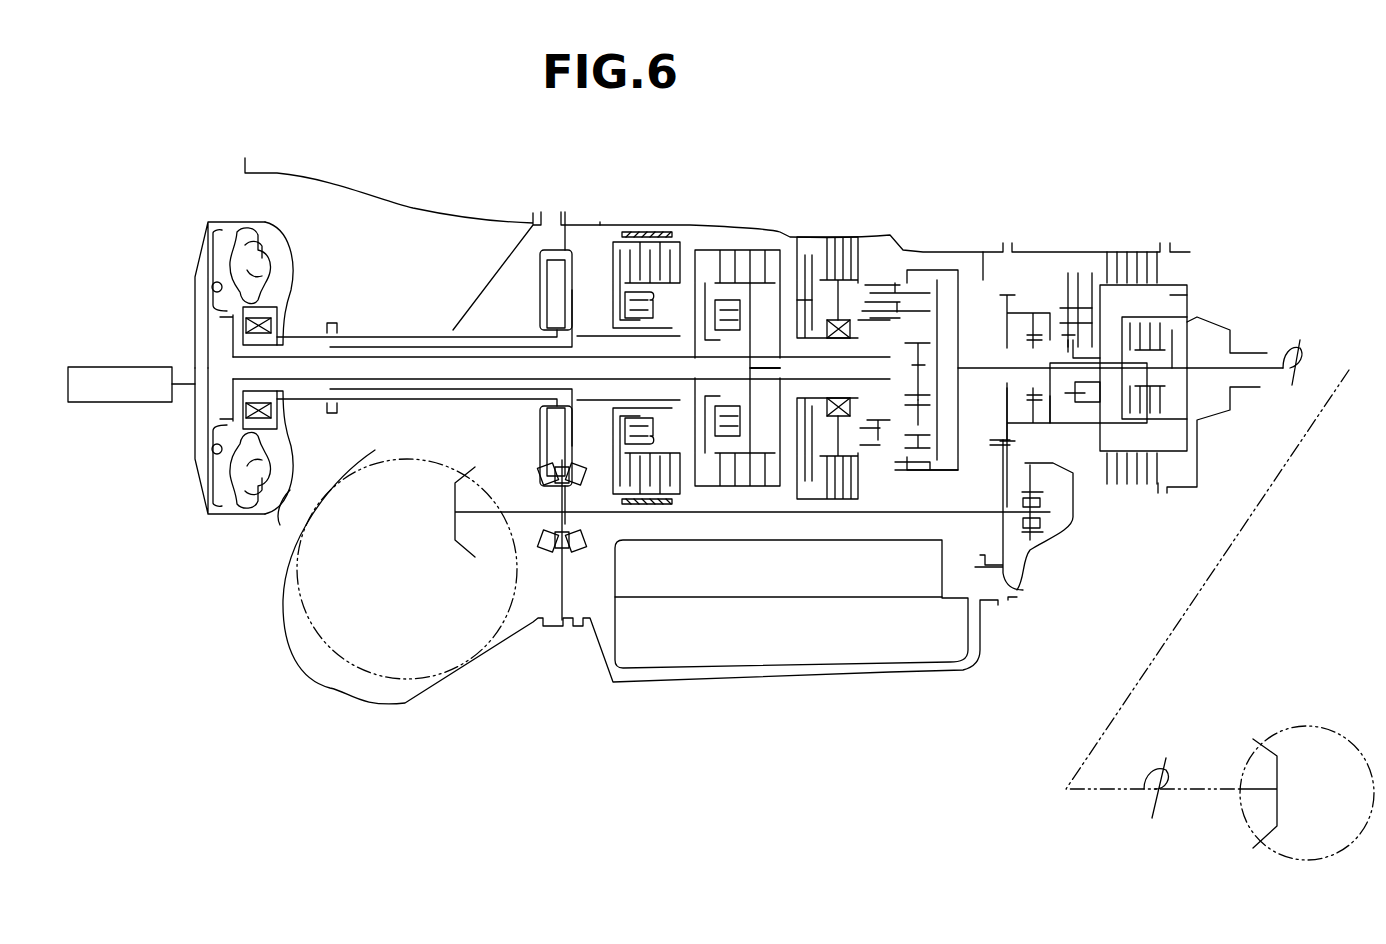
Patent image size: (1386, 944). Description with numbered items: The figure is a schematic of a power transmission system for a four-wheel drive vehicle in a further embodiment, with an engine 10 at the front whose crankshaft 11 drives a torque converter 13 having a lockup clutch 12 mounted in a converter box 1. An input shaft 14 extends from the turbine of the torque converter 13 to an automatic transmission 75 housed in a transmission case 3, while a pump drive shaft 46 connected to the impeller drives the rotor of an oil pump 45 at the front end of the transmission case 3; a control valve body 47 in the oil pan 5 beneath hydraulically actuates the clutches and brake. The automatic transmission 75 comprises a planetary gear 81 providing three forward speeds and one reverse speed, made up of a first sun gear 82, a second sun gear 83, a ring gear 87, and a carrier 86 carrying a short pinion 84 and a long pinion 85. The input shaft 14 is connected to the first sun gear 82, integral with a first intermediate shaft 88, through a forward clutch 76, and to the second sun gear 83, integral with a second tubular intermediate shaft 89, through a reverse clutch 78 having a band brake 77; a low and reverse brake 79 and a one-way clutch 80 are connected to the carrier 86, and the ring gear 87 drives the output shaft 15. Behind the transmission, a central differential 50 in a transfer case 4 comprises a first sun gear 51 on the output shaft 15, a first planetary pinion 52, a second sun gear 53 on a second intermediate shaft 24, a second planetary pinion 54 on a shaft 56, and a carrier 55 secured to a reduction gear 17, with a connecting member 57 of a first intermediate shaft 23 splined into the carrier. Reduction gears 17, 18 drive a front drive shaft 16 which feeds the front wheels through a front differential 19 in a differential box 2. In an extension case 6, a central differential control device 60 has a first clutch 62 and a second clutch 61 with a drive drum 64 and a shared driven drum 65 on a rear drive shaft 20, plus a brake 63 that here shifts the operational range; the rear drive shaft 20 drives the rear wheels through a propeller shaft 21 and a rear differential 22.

The converter box 1 is at (458, 210).
The differential box 2 is at (388, 707).
The transmission case 3 is at (600, 222).
The transfer case 4 is at (1090, 250).
The oil pan 5 is at (783, 675).
The extension case 6 is at (1190, 440).
The engine 10 is at (106, 367).
The crankshaft 11 is at (195, 384).
The lockup clutch 12 is at (207, 258).
The torque converter 13 is at (287, 250).
The input shaft 14 is at (390, 340).
The output shaft 15 is at (984, 369).
The front drive shaft 16 is at (780, 512).
The reduction gear 17 is at (983, 252).
The reduction gear 18 is at (1023, 590).
The front differential 19 is at (403, 680).
The rear drive shaft 20 is at (1290, 352).
The propeller shaft 21 is at (1135, 700).
The rear differential 22 is at (1307, 727).
The first intermediate shaft 23 is at (1048, 308).
The second intermediate shaft 24 is at (1080, 370).
The oil pump 45 is at (552, 308).
The pump drive shaft 46 is at (445, 335).
The control valve body 47 is at (805, 648).
The central differential 50 is at (1026, 262).
The first sun gear 51 is at (1033, 400).
The first planetary pinion 52 is at (1030, 292).
The second sun gear 53 is at (1090, 400).
The second planetary pinion 54 is at (1068, 285).
The carrier 55 is at (1090, 280).
The shaft 56 is at (1043, 280).
The connecting member 57 is at (1045, 410).
The central differential control device 60 is at (1183, 300).
The second clutch 61 is at (1175, 292).
The first clutch 62 is at (1165, 320).
The brake 63 is at (1137, 280).
The drive drum 64 is at (1165, 262).
The driven drum 65 is at (1190, 350).
The automatic transmission 75 is at (740, 192).
The forward clutch 76 is at (745, 260).
The band brake 77 is at (651, 232).
The reverse clutch 78 is at (683, 272).
The low and reverse brake 79 is at (835, 250).
The one-way clutch 80 is at (918, 400).
The planetary gear 81 is at (933, 250).
The first sun gear 82 is at (925, 342).
The second sun gear 83 is at (878, 420).
The short pinion 84 is at (920, 448).
The long pinion 85 is at (875, 285).
The carrier 86 is at (860, 445).
The ring gear 87 is at (905, 468).
The first intermediate shaft 88 is at (763, 372).
The second tubular intermediate shaft 89 is at (795, 275).